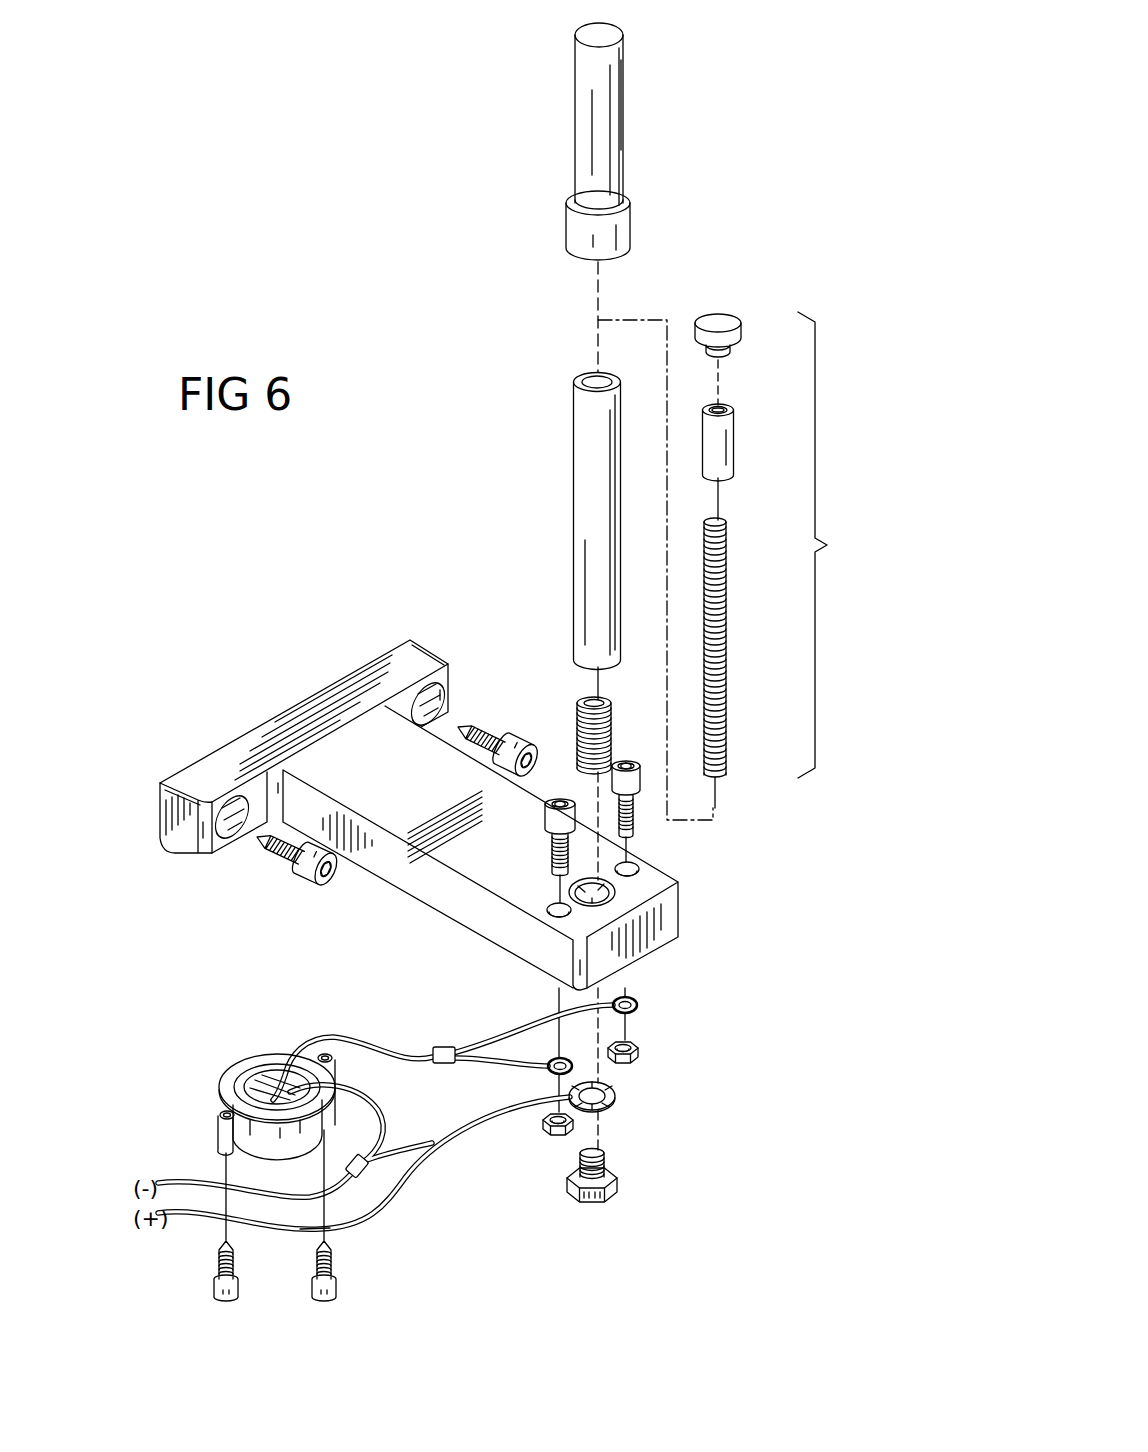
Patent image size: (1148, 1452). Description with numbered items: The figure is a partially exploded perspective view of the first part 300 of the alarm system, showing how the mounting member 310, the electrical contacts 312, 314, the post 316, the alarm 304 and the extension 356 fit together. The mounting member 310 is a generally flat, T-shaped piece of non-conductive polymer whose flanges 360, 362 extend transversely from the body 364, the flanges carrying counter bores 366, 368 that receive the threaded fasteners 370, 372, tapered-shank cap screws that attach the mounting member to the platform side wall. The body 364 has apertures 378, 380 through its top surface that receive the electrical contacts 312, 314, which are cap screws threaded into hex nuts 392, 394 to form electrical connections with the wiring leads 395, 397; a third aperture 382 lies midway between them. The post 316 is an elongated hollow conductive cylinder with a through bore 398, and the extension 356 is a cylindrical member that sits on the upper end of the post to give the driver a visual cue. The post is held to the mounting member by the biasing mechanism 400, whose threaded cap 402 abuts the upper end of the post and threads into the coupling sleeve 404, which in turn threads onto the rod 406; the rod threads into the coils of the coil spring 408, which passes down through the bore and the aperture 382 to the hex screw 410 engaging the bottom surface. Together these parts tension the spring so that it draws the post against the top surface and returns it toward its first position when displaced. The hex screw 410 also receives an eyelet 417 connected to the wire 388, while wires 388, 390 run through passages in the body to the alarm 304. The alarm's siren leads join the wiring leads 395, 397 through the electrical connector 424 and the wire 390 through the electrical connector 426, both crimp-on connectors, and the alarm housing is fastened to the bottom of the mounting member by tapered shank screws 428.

The first part 300 is at (450, 231).
The alarm 304 is at (243, 1003).
The mounting member 310 is at (431, 804).
The electrical contact 312 is at (640, 815).
The electrical contact 314 is at (548, 822).
The post 316 is at (544, 505).
The extension 356 is at (608, 135).
The flange 360 is at (415, 657).
The flange 362 is at (220, 770).
The body 364 is at (432, 887).
The counter bore 366 is at (417, 712).
The counter bore 368 is at (232, 825).
The threaded fastener 370 is at (490, 731).
The threaded fastener 372 is at (300, 880).
The aperture 378 is at (640, 870).
The aperture 380 is at (556, 903).
The aperture 382 is at (620, 893).
The wire 388 is at (365, 1210).
The wire 390 is at (186, 1180).
The hex nut 392 is at (638, 1051).
The hex nut 394 is at (546, 1130).
The wiring lead 395 is at (640, 1005).
The wiring lead 397 is at (548, 1068).
The through bore 398 is at (585, 378).
The biasing mechanism 400 is at (784, 535).
The threaded cap 402 is at (719, 325).
The threaded coupling sleeve 404 is at (727, 455).
The threaded rod 406 is at (728, 659).
The coil spring 408 is at (586, 702).
The hex screw 410 is at (612, 1172).
The eyelet 417 is at (615, 1097).
The electrical connector 424 is at (444, 1047).
The electrical connector 426 is at (398, 1185).
The tapered shank screw 428 is at (215, 1290).